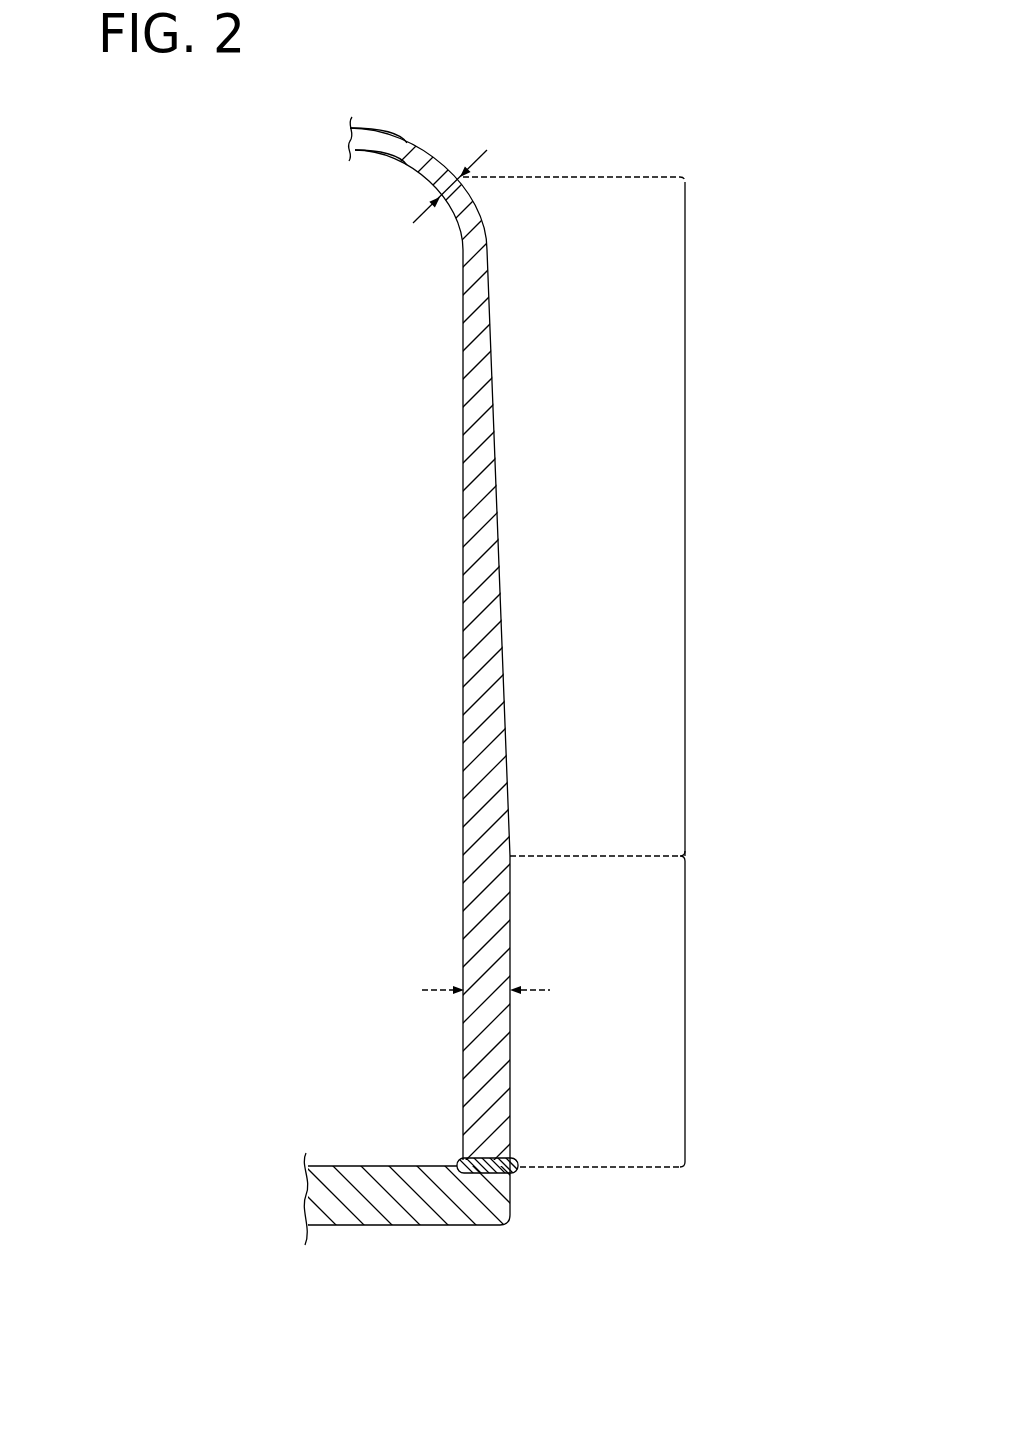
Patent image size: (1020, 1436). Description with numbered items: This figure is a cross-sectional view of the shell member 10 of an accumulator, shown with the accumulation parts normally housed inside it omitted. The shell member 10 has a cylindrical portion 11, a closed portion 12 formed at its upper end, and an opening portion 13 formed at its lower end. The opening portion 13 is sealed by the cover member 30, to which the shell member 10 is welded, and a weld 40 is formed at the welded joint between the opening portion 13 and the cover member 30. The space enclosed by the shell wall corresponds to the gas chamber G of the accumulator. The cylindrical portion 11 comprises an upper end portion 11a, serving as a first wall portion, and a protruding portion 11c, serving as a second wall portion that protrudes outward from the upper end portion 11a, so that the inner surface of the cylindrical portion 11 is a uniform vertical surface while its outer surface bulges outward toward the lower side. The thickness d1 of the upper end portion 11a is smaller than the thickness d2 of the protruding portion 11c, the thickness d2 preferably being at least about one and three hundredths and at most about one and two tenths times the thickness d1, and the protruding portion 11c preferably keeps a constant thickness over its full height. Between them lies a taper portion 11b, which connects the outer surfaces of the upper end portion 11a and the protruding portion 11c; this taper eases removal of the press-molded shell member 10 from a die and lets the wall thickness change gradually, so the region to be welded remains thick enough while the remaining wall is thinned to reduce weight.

The shell member 10 is at (576, 72).
The cylindrical portion 11 is at (560, 669).
The upper end portion 11a is at (486, 166).
The taper portion 11b is at (685, 509).
The protruding portion 11c is at (685, 1002).
The closed portion 12 is at (366, 128).
The opening portion 13 is at (510, 1138).
The cover member 30 is at (408, 1227).
The weld 40 is at (520, 1170).
The thickness of the upper end portion d1 is at (438, 186).
The thickness of the protruding portion d2 is at (482, 990).
The gas chamber G is at (372, 543).